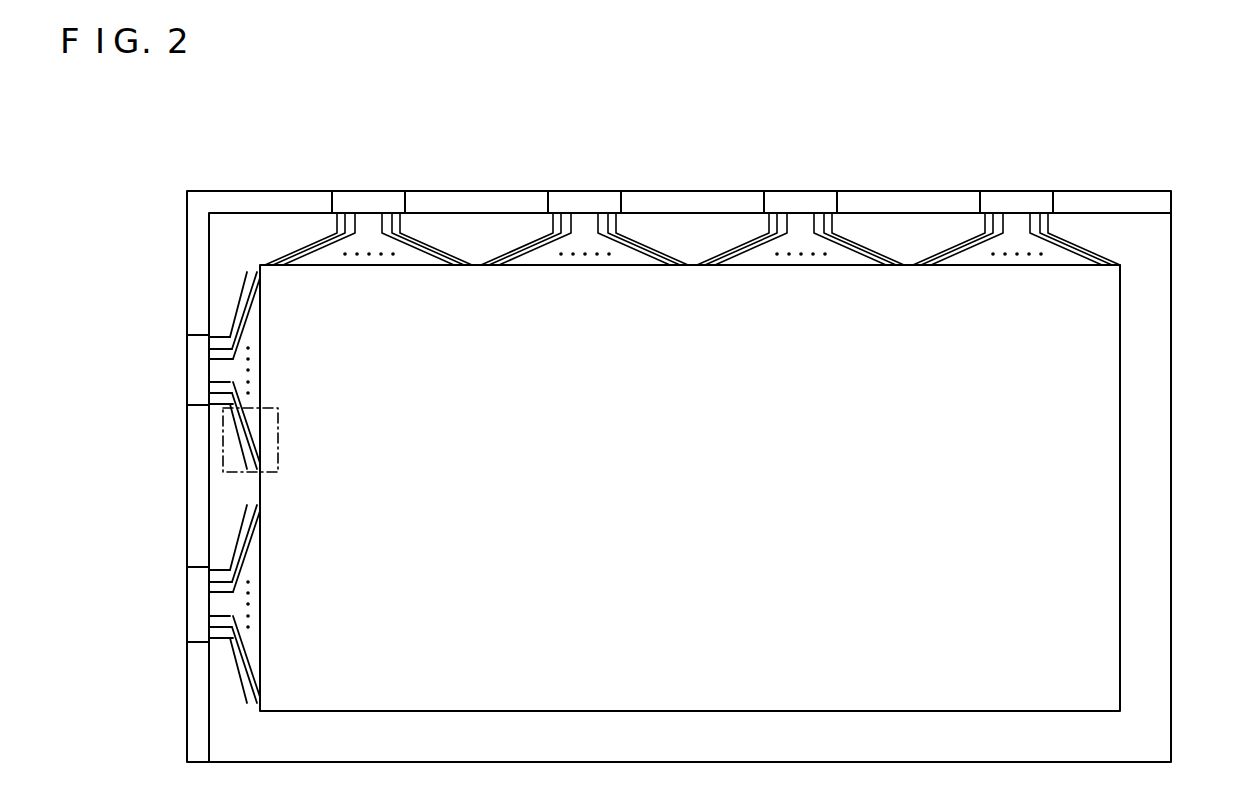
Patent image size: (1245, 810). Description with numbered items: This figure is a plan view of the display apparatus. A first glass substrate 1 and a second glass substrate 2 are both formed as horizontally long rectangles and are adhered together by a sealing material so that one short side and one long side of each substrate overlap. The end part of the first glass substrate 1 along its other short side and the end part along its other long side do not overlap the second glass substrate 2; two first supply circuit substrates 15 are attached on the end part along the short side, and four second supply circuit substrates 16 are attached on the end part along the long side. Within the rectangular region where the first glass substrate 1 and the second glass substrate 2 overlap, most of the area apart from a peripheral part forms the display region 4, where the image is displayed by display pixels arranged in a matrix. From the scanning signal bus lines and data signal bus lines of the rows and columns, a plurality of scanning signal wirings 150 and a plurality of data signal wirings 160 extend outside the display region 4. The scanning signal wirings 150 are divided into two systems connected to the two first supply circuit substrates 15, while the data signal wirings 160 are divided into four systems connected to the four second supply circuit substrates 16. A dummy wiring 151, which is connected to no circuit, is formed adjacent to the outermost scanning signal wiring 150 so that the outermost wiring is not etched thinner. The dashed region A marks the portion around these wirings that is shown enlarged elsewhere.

The first glass substrate 1 is at (222, 191).
The second glass substrate 2 is at (263, 220).
The display region 4 is at (1110, 619).
The first supply circuit substrate 15 is at (193, 370).
The scanning signal wiring 150 is at (223, 334).
The dummy wiring 151 is at (240, 302).
The second supply circuit substrate 16 is at (365, 203).
The data signal wiring 160 is at (303, 242).
The enlarged region A is at (238, 476).